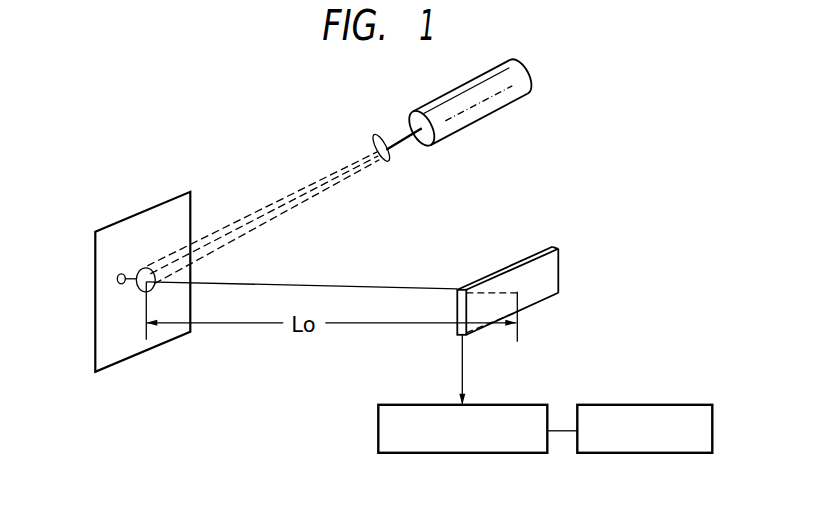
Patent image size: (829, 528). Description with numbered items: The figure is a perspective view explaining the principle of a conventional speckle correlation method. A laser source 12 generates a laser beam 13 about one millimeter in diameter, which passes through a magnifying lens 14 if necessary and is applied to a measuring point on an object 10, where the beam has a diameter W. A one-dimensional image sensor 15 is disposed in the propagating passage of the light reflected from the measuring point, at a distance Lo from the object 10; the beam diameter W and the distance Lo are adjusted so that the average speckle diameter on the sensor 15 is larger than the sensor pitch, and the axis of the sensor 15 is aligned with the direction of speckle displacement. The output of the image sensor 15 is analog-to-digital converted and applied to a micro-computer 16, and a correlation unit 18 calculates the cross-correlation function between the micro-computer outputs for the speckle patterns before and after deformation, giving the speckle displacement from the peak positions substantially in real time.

The object 10 is at (95, 323).
The laser source 12 is at (507, 100).
The laser beam 13 is at (399, 136).
The magnifying lens 14 is at (388, 158).
The one-dimensional image sensor 15 is at (506, 266).
The micro-computer 16 is at (510, 404).
The correlation unit 18 is at (672, 404).